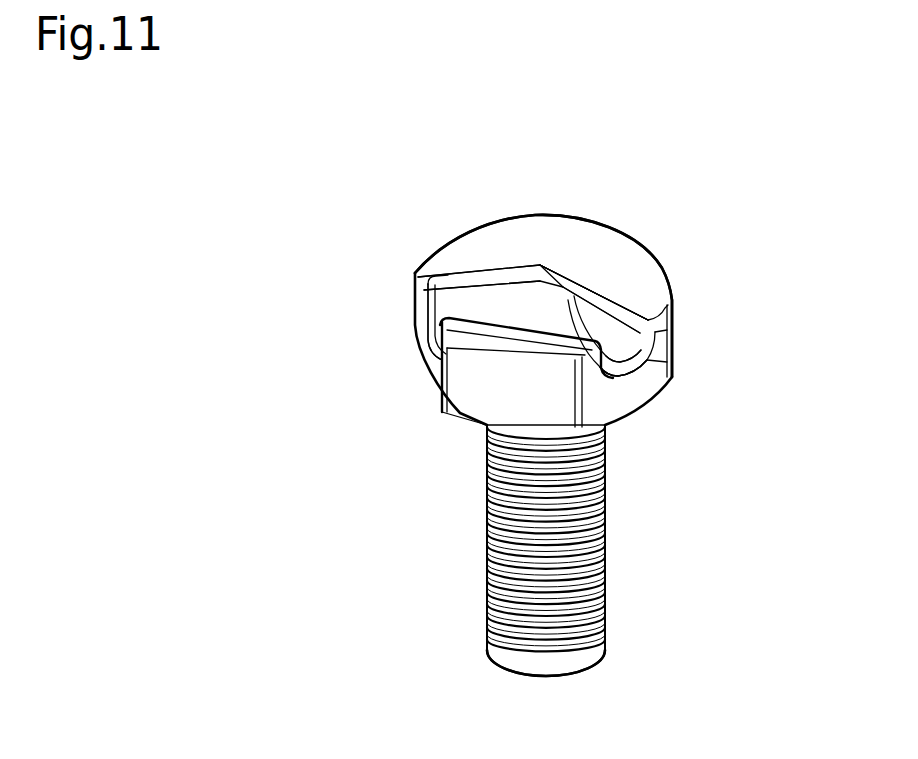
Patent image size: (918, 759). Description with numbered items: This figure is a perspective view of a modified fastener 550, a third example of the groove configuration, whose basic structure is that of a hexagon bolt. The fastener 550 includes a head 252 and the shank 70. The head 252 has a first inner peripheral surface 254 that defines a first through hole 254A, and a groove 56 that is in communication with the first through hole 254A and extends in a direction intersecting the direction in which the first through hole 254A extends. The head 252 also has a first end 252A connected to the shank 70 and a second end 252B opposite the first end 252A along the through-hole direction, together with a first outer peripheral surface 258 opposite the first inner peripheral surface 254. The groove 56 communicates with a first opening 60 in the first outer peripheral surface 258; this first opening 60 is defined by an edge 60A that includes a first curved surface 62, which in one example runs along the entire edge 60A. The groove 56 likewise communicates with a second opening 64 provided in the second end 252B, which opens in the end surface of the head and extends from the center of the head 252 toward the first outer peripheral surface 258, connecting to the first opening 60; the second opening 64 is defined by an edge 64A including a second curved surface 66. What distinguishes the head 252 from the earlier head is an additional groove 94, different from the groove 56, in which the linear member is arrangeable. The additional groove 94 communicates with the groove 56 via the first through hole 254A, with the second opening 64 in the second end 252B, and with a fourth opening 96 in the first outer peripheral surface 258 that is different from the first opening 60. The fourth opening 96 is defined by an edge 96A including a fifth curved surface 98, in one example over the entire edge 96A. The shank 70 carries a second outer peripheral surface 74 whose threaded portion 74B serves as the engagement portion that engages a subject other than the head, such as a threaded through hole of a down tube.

The fastener 550 is at (707, 187).
The head 252 is at (690, 282).
The edge 64A is at (500, 277).
The second opening 64 is at (533, 292).
The first through hole 254A is at (545, 303).
The first inner peripheral surface 254 is at (594, 292).
The additional groove 94 is at (460, 302).
The second curved surface 66 is at (560, 273).
The groove 56 is at (610, 330).
The edge 96A is at (427, 307).
The fourth opening 96 is at (435, 322).
The first curved surface 62 is at (650, 347).
The fifth curved surface 98 is at (432, 342).
The first outer peripheral surface 258 is at (660, 367).
The second end 252B is at (440, 360).
The first end 252A is at (462, 400).
The edge 60A is at (627, 378).
The first opening 60 is at (623, 368).
The second outer peripheral surface 74 is at (603, 525).
The threaded portion 74B is at (487, 532).
The shank 70 is at (638, 617).